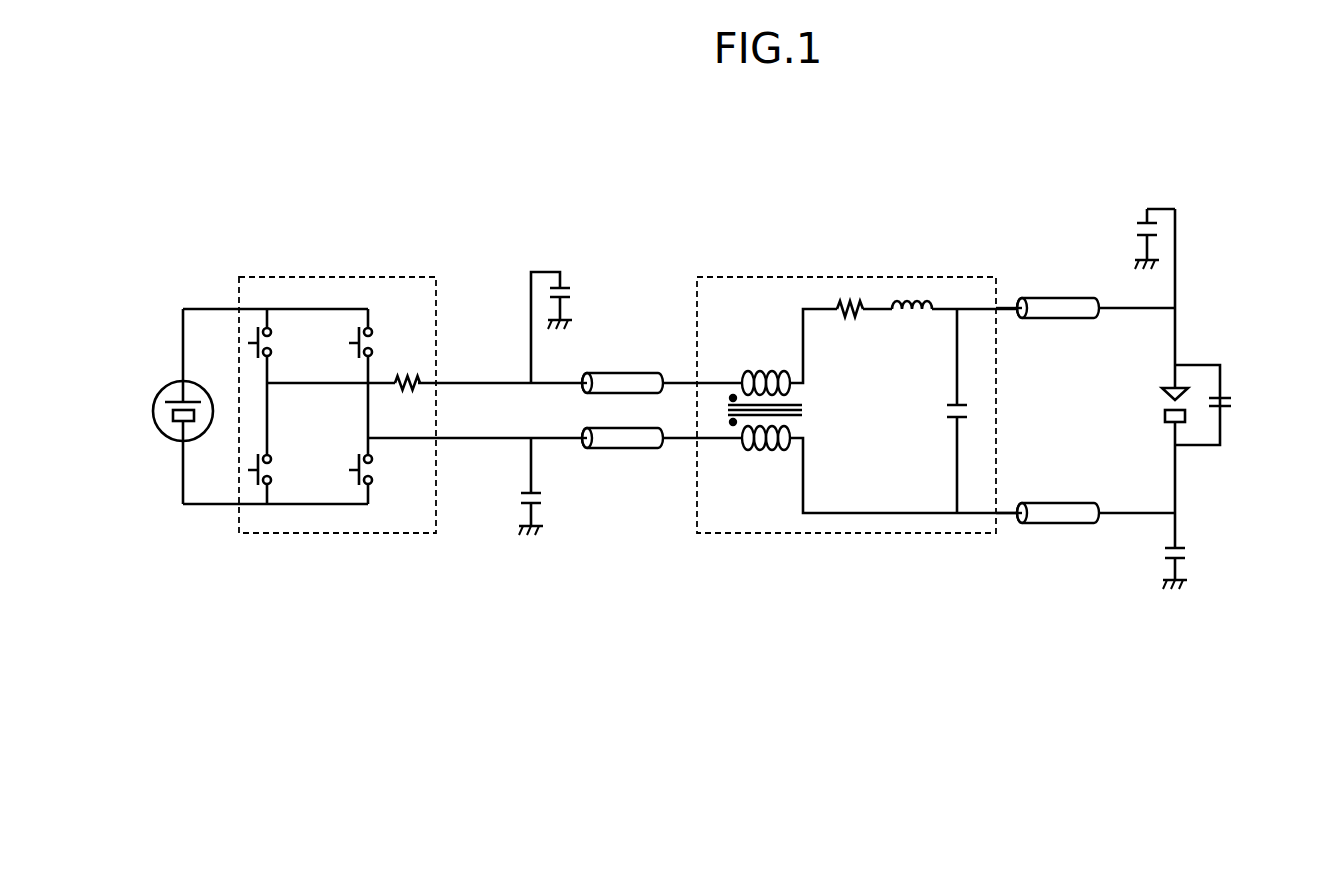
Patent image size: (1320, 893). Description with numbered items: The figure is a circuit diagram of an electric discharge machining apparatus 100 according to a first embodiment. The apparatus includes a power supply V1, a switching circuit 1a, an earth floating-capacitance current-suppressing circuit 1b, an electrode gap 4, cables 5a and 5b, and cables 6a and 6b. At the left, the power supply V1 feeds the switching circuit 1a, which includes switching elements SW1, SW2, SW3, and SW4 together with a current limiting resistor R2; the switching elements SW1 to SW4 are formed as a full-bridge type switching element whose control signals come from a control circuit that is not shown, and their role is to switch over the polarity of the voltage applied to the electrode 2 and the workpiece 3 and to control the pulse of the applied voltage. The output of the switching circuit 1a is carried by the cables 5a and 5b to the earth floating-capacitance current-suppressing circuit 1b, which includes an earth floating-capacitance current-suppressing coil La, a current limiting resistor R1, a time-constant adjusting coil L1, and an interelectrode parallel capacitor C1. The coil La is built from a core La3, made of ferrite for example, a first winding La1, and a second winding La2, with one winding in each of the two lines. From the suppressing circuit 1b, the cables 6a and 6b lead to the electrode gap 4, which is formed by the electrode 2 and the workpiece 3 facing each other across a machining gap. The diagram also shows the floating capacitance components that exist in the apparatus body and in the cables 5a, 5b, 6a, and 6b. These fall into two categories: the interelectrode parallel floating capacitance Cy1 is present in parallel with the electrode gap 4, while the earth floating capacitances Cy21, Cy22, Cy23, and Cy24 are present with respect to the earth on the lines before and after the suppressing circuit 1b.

The electric discharge machining apparatus 100 is at (978, 160).
The power supply V1 is at (199, 383).
The switching circuit 1a is at (398, 275).
The switching element SW1 is at (274, 345).
The switching element SW2 is at (374, 340).
The switching element SW3 is at (274, 472).
The switching element SW4 is at (374, 467).
The current limiting resistor R2 is at (413, 390).
The earth floating capacitance Cy21 is at (566, 287).
The earth floating capacitance Cy23 is at (541, 497).
The cable 5a is at (631, 372).
The cable 5b is at (640, 450).
The earth floating-capacitance current-suppressing circuit 1b is at (812, 275).
The earth floating-capacitance current-suppressing coil La is at (757, 286).
The first winding La1 is at (757, 358).
The second winding La2 is at (762, 466).
The core La3 is at (816, 413).
The current limiting resistor R1 is at (848, 320).
The time-constant adjusting coil L1 is at (910, 318).
The interelectrode parallel capacitor C1 is at (947, 407).
The cable 6a is at (1060, 318).
The cable 6b is at (1055, 503).
The earth floating capacitance Cy22 is at (1140, 228).
The earth floating capacitance Cy24 is at (1167, 550).
The electrode gap 4 is at (1160, 365).
The electrode 2 is at (1184, 384).
The workpiece 3 is at (1181, 424).
The interelectrode parallel floating capacitance Cy1 is at (1224, 396).